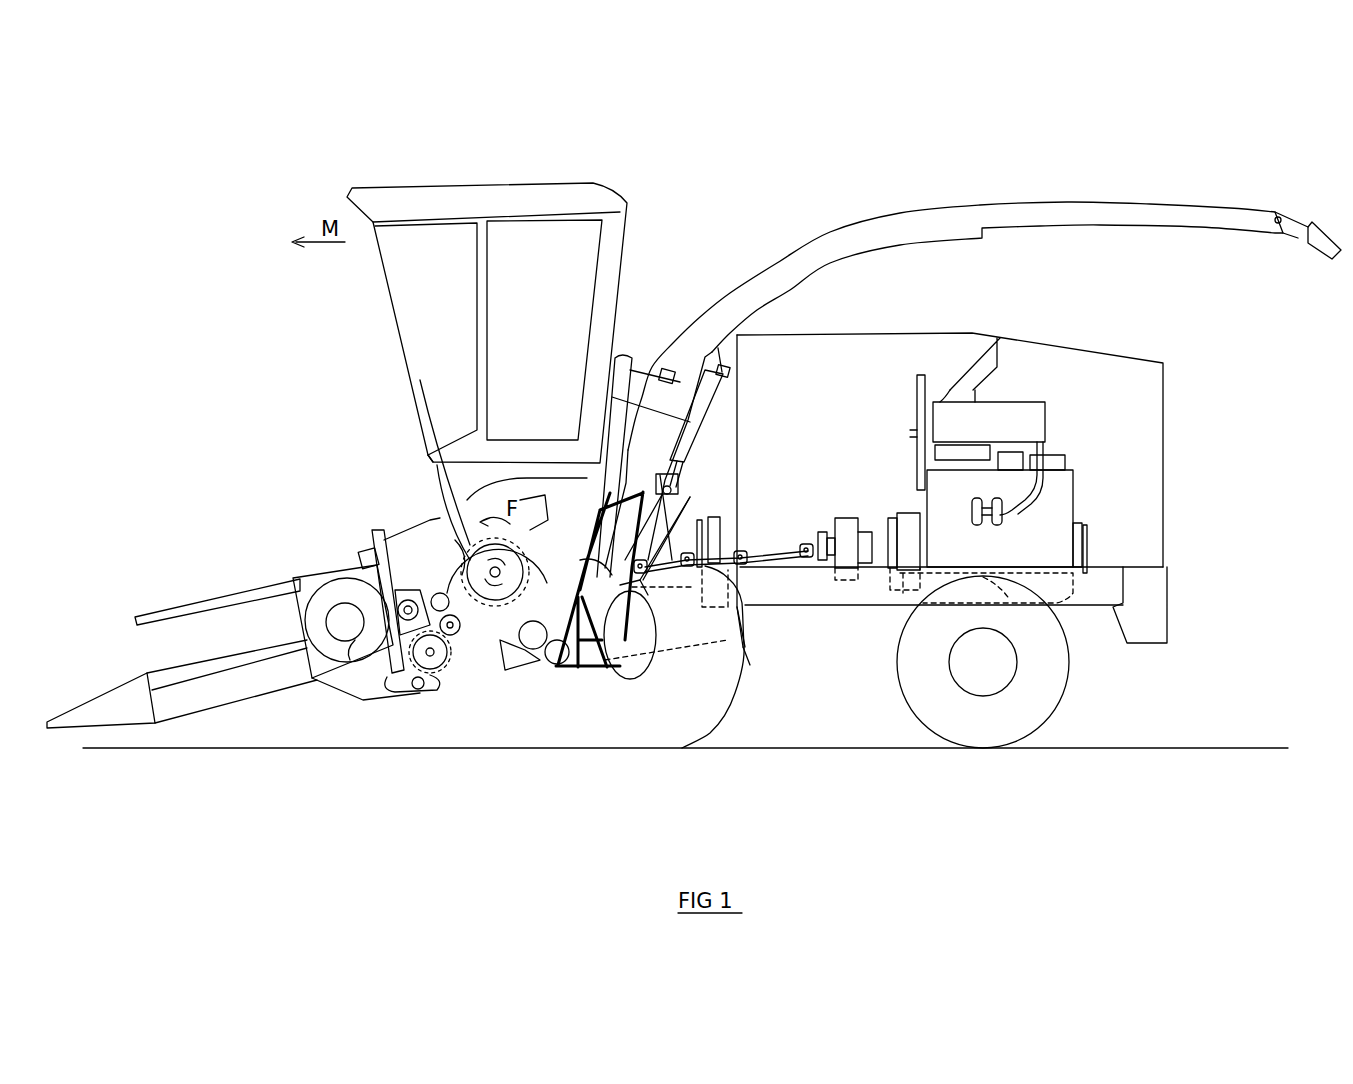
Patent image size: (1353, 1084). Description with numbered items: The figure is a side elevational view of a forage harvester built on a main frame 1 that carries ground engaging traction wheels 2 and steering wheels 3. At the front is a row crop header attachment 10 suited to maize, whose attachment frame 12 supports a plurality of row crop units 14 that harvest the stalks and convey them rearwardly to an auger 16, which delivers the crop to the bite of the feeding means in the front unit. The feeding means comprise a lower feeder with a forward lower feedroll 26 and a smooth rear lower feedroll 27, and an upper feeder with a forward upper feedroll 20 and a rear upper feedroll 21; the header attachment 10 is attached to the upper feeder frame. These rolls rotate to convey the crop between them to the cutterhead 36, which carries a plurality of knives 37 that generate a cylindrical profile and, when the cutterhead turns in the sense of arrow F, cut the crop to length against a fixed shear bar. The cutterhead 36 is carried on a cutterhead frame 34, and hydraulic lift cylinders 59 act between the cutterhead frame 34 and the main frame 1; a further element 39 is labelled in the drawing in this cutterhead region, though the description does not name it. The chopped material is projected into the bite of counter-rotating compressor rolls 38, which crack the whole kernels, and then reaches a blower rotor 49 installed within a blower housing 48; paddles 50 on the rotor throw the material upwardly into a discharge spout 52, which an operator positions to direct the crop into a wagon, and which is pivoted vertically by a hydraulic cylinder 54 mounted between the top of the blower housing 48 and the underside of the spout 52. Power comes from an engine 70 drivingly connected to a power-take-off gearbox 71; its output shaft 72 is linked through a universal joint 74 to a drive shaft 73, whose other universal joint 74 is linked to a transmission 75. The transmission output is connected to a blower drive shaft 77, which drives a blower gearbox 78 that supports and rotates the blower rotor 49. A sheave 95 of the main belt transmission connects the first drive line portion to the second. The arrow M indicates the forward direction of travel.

The main frame 1 is at (853, 630).
The ground engaging traction wheels 2 is at (612, 737).
The steering wheels 3 is at (983, 738).
The row crop header attachment 10 is at (220, 565).
The attachment frame 12 is at (370, 693).
The row crop units 14 is at (167, 710).
The auger 16 is at (332, 585).
The forward upper feedroll 20 is at (373, 563).
The rear upper feedroll 21 is at (428, 590).
The forward lower feedroll 26 is at (432, 674).
The smooth rear lower feedroll 27 is at (452, 636).
The cutterhead frame 34 is at (438, 488).
The cutterhead 36 is at (440, 520).
The knives 37 is at (428, 455).
The counter-rotating compressor rolls 38 is at (533, 650).
The cutterhead 39 is at (495, 550).
The blower housing 48 is at (632, 655).
The blower rotor 49 is at (600, 597).
The paddles 50 is at (659, 516).
The discharge spout 52 is at (993, 149).
The hydraulic cylinder 54 is at (707, 417).
The hydraulic lift cylinders 59 is at (515, 667).
The engine 70 is at (1063, 493).
The power-take-off gearbox 71 is at (890, 523).
The output shaft 72 is at (810, 548).
The drive shaft 73 is at (760, 558).
The universal joint 74 is at (805, 570).
The transmission 75 is at (712, 628).
The blower drive shaft 77 is at (667, 553).
The blower gearbox 78 is at (627, 588).
The sheave 95 is at (843, 525).